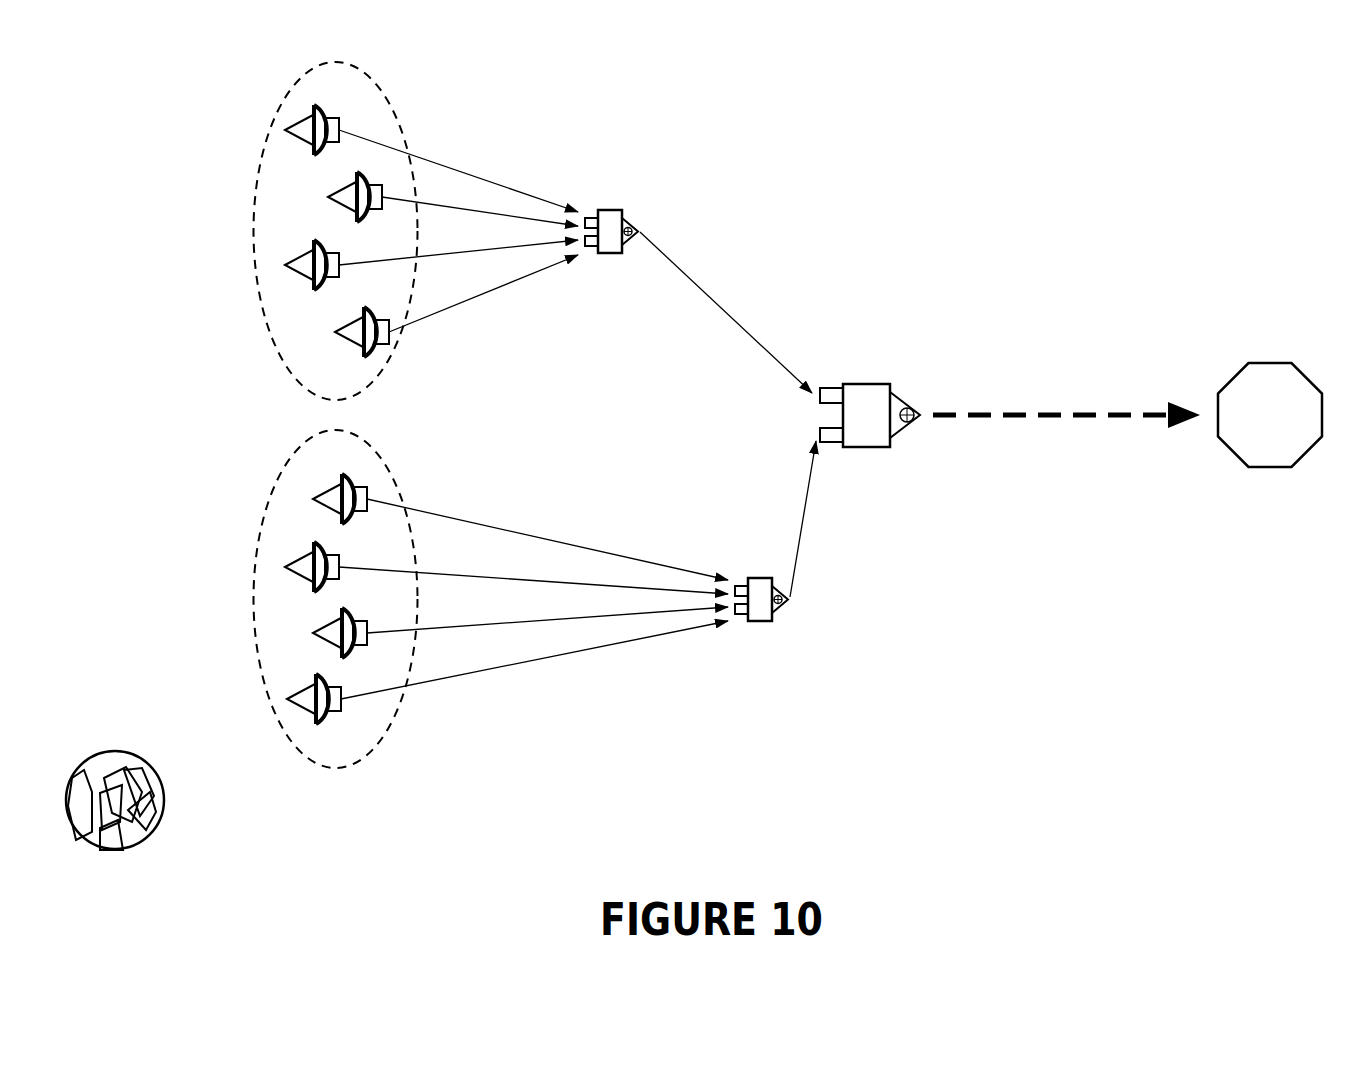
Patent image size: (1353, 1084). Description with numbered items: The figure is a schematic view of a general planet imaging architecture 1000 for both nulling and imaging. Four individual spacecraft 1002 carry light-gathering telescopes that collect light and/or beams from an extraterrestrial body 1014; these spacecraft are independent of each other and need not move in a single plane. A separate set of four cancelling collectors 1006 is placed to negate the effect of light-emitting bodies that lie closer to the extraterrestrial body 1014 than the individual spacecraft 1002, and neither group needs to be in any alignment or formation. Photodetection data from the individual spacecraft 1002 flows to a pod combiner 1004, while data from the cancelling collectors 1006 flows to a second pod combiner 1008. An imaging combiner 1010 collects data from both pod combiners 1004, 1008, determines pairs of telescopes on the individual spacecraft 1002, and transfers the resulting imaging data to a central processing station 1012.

The general planet imaging architecture 1000 is at (700, 458).
The individual spacecraft 1002 is at (253, 231).
The pod combiner 1004 is at (610, 211).
The cancelling collectors 1006 is at (253, 600).
The pod combiner 1008 is at (760, 622).
The imaging combiner 1010 is at (871, 385).
The central processing station 1012 is at (1272, 467).
The extraterrestrial body 1014 is at (193, 800).